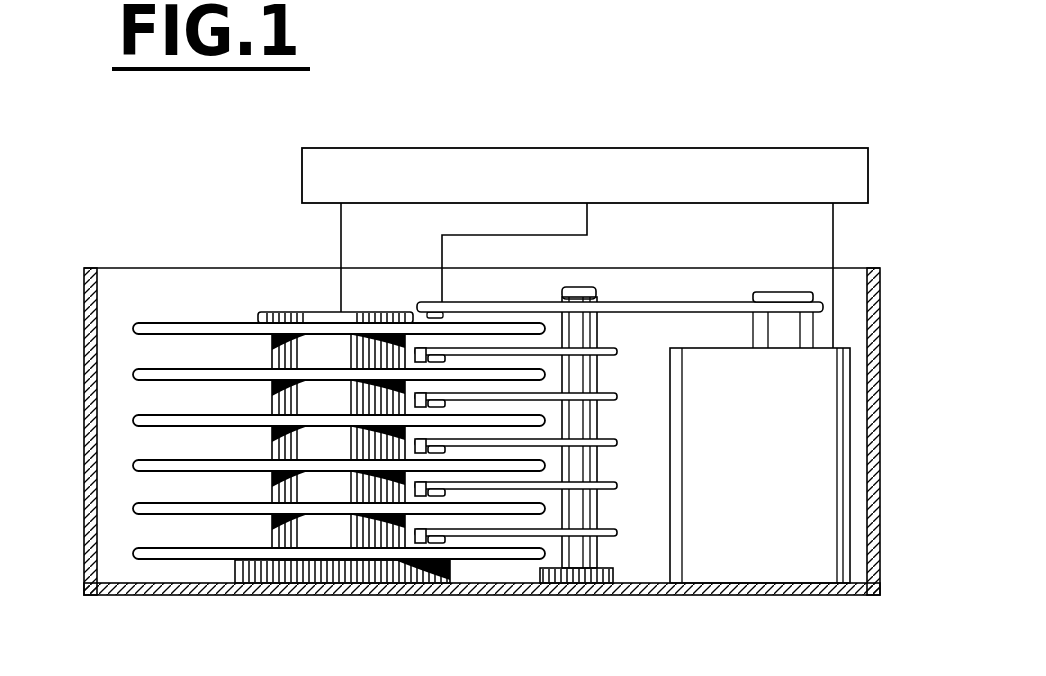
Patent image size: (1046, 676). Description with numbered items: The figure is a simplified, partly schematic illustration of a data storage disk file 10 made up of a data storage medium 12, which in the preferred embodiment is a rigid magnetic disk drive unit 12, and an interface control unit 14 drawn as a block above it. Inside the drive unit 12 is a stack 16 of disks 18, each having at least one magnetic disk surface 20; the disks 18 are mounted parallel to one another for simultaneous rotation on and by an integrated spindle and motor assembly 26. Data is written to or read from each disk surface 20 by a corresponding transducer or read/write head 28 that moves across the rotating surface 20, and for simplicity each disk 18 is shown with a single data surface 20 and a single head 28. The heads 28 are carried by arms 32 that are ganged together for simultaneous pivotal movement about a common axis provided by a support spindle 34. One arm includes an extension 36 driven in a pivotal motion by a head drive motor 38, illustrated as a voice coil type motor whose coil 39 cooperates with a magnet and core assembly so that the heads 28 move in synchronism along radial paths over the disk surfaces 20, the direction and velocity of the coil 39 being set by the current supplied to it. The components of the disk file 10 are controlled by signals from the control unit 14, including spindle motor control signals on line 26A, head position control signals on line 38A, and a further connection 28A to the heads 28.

The data storage disk file 10 is at (897, 168).
The data storage medium 12 is at (262, 259).
The interface control unit 14 is at (742, 148).
The stack 16 is at (207, 298).
The disk 18 is at (133, 463).
The magnetic disk surface 20 is at (160, 323).
The integrated spindle and motor assembly 26 is at (340, 528).
The line 26A is at (340, 250).
The read/write head 28 is at (460, 314).
The lead to contact clips 28A is at (440, 252).
The arm 32 is at (615, 440).
The support spindle 34 is at (575, 568).
The extension 36 is at (655, 302).
The head drive motor 38 is at (855, 504).
The line 38A is at (836, 250).
The coil 39 is at (787, 292).